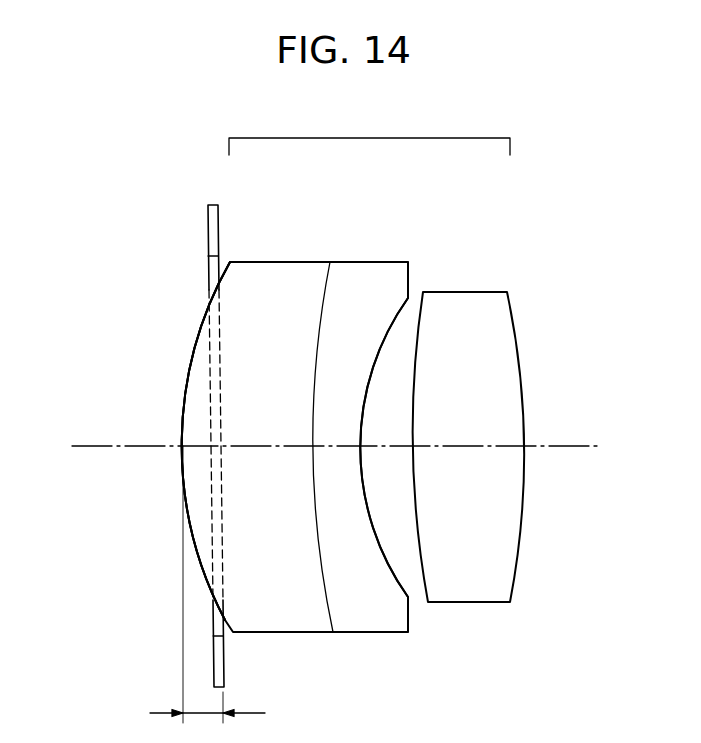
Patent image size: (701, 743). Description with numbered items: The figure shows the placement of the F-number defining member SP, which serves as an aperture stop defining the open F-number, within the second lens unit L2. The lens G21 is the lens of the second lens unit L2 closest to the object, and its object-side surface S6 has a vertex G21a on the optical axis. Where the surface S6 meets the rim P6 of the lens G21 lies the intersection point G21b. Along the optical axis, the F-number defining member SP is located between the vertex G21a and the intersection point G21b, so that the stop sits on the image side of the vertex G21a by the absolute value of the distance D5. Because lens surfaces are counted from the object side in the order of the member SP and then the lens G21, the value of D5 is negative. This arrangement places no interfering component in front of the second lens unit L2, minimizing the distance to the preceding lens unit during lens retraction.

The second lens unit L2 is at (369, 131).
The F-number defining member SP is at (213, 228).
The rim P6 is at (280, 262).
The intersection point G21b is at (230, 262).
The lens G21 is at (313, 272).
The vertex G21a is at (182, 447).
The surface S6 is at (203, 573).
The distance D5 is at (227, 587).